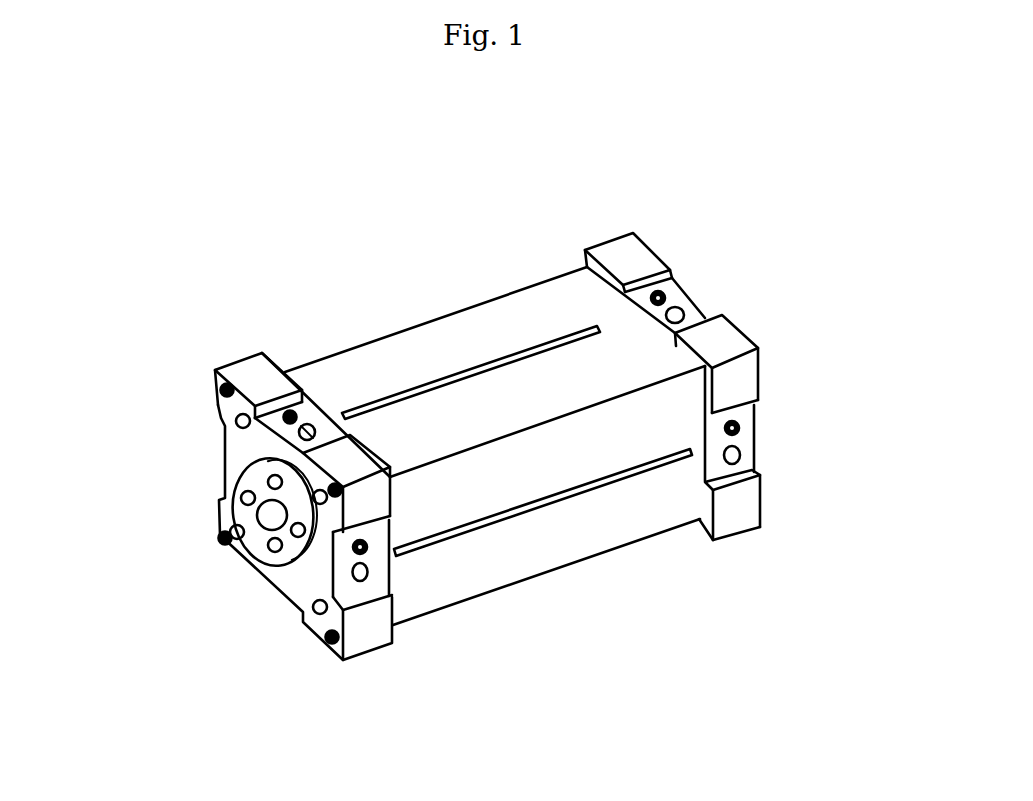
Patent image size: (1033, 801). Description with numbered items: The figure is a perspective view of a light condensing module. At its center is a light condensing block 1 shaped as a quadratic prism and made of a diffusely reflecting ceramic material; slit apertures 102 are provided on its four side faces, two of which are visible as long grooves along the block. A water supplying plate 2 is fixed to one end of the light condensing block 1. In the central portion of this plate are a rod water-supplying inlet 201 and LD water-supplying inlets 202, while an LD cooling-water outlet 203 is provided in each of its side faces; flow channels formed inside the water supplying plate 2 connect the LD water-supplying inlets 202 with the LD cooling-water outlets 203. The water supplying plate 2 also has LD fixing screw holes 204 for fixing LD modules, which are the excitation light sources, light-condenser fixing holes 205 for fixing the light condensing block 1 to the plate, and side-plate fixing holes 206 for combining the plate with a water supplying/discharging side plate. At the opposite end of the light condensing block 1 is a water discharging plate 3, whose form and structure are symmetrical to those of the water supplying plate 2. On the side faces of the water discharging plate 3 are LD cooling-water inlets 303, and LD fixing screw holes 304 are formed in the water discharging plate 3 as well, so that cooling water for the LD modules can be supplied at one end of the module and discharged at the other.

The light condensing block 1 is at (483, 403).
The water supplying plate 2 is at (269, 446).
The water discharging plate 3 is at (672, 327).
The slit apertures 102 is at (543, 554).
The rod water-supplying inlet 201 is at (160, 537).
The LD water-supplying inlets 202 is at (240, 588).
The LD cooling-water outlet 203 is at (301, 569).
The LD fixing screw holes 204 is at (296, 648).
The light-condenser fixing holes 205 is at (142, 373).
The side-plate fixing holes 206 is at (141, 603).
The LD cooling-water inlets 303 is at (828, 500).
The LD fixing screw holes 304 is at (827, 439).